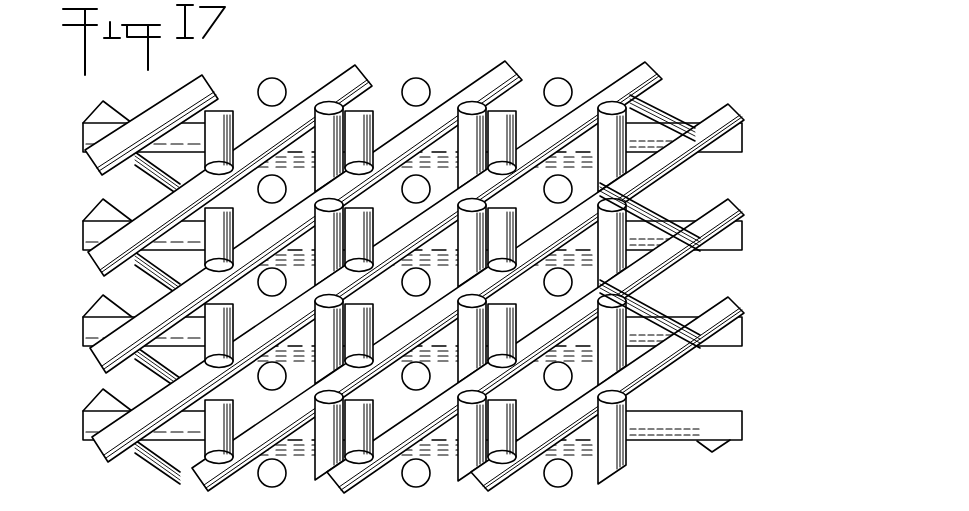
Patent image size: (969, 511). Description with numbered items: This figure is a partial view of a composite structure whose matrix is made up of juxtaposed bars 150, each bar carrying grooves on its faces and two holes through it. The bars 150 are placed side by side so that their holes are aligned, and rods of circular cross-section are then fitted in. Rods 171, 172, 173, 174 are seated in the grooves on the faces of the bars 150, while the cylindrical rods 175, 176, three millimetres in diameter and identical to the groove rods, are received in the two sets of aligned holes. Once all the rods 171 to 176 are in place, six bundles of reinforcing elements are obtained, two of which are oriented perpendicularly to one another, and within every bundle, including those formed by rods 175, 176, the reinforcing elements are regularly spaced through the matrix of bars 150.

The bar 150 is at (345, 207).
The rod 171 is at (707, 128).
The rod 172 is at (695, 303).
The rod 173 is at (600, 195).
The rod 174 is at (312, 165).
The cylindrical rod 175 is at (553, 90).
The cylindrical rod 176 is at (703, 422).